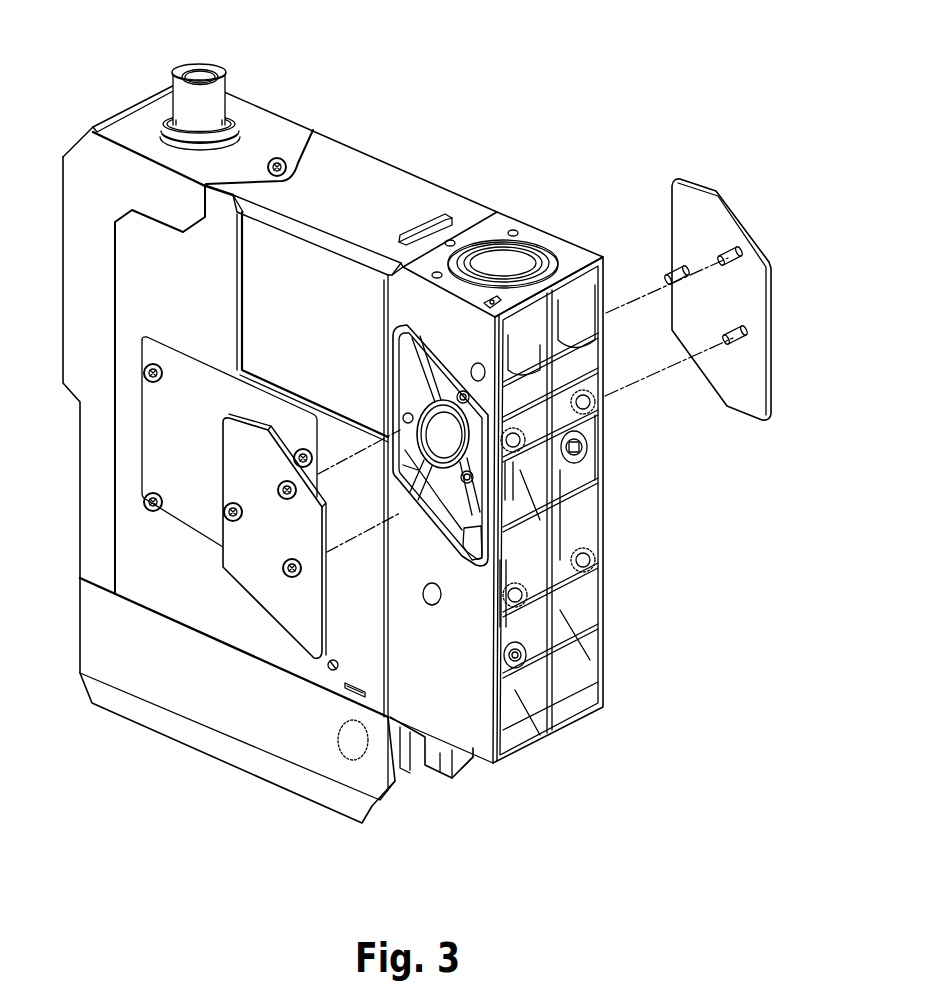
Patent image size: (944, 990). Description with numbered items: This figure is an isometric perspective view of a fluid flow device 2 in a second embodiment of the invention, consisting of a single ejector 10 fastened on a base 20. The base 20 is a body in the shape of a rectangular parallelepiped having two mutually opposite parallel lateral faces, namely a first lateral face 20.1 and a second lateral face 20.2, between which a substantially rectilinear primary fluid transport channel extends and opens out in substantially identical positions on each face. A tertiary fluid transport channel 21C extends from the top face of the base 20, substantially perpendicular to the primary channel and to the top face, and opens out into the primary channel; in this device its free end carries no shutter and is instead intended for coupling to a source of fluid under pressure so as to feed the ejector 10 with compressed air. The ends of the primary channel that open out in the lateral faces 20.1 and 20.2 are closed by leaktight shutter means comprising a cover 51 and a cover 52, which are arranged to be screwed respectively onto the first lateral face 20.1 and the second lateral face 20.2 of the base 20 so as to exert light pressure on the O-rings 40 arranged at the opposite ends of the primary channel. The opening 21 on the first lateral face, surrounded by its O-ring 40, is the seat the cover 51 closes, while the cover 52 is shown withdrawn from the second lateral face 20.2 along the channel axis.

The fluid flow device 2 is at (508, 92).
The ejector 10 is at (372, 193).
The base 20 is at (568, 248).
The first lateral face 20.1 is at (452, 735).
The second lateral face 20.2 is at (606, 639).
The interface recess 21 is at (453, 443).
The tertiary fluid transport channel 21C is at (500, 258).
The O-rings 40 is at (418, 410).
The cover 51 is at (265, 611).
The cover 52 is at (735, 306).